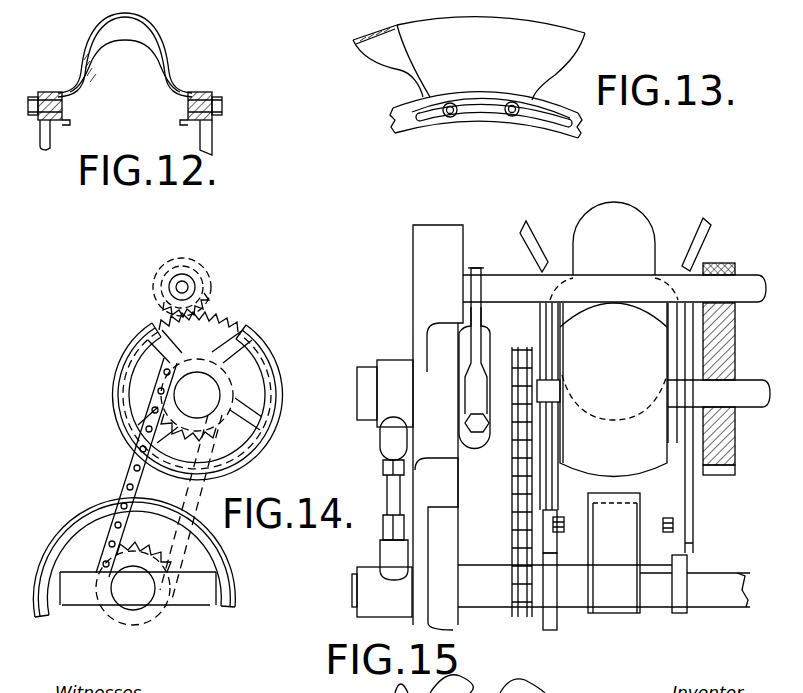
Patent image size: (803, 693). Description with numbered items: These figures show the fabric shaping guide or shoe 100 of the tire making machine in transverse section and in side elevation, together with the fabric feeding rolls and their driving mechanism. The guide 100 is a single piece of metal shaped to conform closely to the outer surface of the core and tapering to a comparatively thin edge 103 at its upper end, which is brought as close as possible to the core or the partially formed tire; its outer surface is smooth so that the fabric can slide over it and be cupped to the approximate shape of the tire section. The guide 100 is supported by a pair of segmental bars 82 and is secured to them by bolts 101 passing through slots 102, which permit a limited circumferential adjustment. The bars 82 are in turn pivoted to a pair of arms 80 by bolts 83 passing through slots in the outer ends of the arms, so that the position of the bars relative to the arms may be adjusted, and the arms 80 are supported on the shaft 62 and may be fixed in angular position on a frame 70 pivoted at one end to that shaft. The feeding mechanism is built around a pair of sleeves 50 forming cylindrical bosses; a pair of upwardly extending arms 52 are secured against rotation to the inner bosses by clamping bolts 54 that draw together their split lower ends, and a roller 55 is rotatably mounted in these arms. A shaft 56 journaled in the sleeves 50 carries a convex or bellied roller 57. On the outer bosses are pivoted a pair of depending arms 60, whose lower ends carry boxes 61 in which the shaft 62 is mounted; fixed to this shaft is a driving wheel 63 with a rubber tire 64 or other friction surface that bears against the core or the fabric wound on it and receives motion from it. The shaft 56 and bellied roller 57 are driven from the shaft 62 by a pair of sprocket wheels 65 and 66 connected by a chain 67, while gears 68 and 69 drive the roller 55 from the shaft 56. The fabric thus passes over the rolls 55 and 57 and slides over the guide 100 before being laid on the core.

In FIG. 15, the sleeves 50 is at (359, 367).
In FIG. 15, the upwardly extending arms 52 is at (475, 266).
In FIG. 15, the clamping bolts 54 is at (482, 433).
In FIG. 15, the roller 55 is at (743, 277).
In FIG. 15, the shaft 56 is at (767, 368).
In FIG. 15, the convex or bellied roller 57 is at (613, 390).
In FIG. 15, the depending arms 60 is at (390, 500).
In FIG. 15, the boxes 61 is at (364, 573).
In FIG. 15, the shaft 62 is at (712, 578).
In FIG. 14, the driving wheel 63 is at (215, 577).
In FIG. 15, the driving wheel 63 is at (640, 518).
In FIG. 14, the rubber tire 64 is at (227, 590).
In FIG. 15, the rubber tire 64 is at (618, 495).
In FIG. 14, the sprocket wheel 65 is at (205, 420).
In FIG. 14, the sprocket wheel 66 is at (150, 513).
In FIG. 14, the chain 67 is at (130, 480).
In FIG. 15, the chain 67 is at (512, 522).
In FIG. 14, the gear 68 is at (206, 273).
In FIG. 15, the gear 68 is at (737, 305).
In FIG. 14, the gear 69 is at (222, 313).
In FIG. 15, the gear 69 is at (735, 341).
In FIG. 15, the frame 70 is at (550, 590).
In FIG. 15, the arms 80 is at (557, 545).
In FIG. 12, the segmental bars 82 is at (42, 135).
In FIG. 13, the segmental bars 82 is at (565, 126).
In FIG. 15, the segmental bars 82 is at (546, 446).
In FIG. 15, the bolts 83 is at (557, 515).
In FIG. 12, the fabric shaping guide or shoe 100 is at (152, 27).
In FIG. 13, the fabric shaping guide or shoe 100 is at (469, 58).
In FIG. 15, the fabric shaping guide or shoe 100 is at (635, 220).
In FIG. 12, the bolts 101 is at (216, 101).
In FIG. 13, the bolts 101 is at (506, 116).
In FIG. 13, the slots 102 is at (424, 119).
In FIG. 13, the thin edge 103 is at (367, 14).